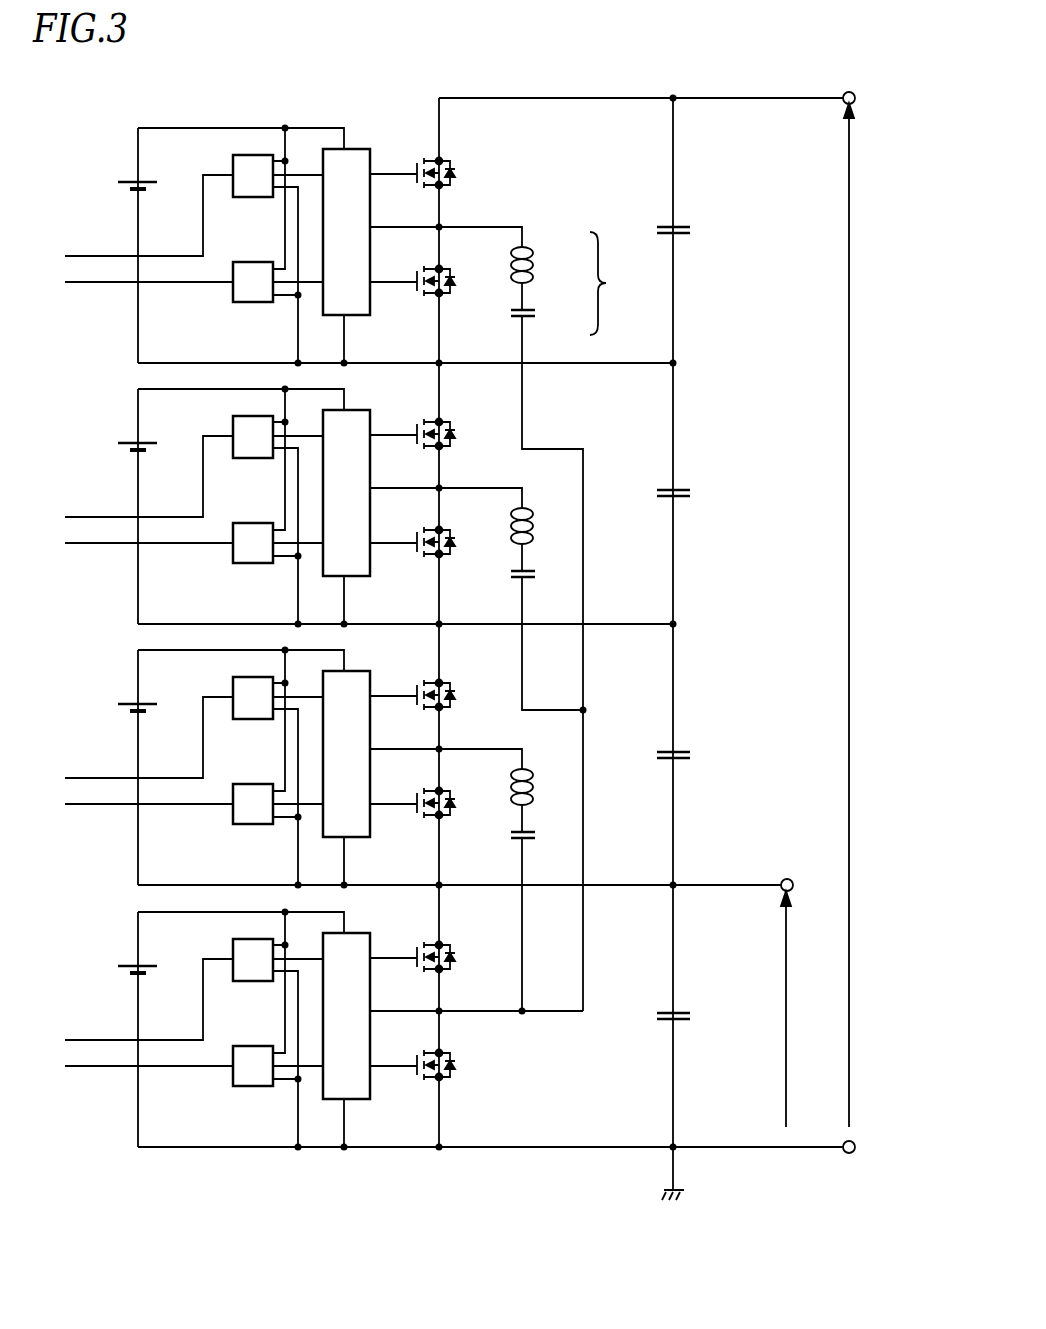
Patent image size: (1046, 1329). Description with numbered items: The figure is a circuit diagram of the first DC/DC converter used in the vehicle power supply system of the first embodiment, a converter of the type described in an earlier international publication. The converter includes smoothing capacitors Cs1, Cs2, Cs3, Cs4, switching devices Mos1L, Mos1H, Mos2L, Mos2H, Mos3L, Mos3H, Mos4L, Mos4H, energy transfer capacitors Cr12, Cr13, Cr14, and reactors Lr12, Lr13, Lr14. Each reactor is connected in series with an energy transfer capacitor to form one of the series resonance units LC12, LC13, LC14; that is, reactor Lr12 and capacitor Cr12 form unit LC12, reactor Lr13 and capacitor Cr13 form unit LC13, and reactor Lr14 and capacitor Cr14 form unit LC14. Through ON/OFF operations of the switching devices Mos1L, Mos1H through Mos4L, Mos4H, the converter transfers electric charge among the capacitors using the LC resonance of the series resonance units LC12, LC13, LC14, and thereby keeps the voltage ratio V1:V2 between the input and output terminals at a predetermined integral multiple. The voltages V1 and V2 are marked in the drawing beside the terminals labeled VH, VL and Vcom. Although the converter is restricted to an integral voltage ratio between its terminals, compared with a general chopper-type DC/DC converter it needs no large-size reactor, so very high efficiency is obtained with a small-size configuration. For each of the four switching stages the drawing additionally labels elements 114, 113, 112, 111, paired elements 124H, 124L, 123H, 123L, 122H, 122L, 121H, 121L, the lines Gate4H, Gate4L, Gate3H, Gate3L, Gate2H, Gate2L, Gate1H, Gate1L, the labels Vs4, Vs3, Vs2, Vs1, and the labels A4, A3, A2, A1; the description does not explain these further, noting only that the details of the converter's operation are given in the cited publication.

The drive circuit (stage 4) 114 is at (358, 248).
The drive circuit (stage 3) 113 is at (358, 509).
The drive circuit (stage 2) 112 is at (358, 770).
The drive circuit (stage 1) 111 is at (358, 1032).
The high-side gate signal isolator (stage 4) 124H is at (224, 165).
The low-side gate signal isolator (stage 4) 124L is at (253, 302).
The high-side gate signal isolator (stage 3) 123H is at (224, 426).
The low-side gate signal isolator (stage 3) 123L is at (253, 563).
The high-side gate signal isolator (stage 2) 122H is at (224, 687).
The low-side gate signal isolator (stage 2) 122L is at (253, 824).
The high-side gate signal isolator (stage 1) 121H is at (224, 949).
The low-side gate signal isolator (stage 1) 121L is at (253, 1086).
The switching device Mos4H is at (463, 161).
The switching device Mos4L is at (462, 296).
The switching device Mos3H is at (463, 422).
The switching device Mos3L is at (462, 557).
The switching device Mos2H is at (463, 683).
The switching device Mos2L is at (462, 818).
The switching device Mos1H is at (463, 945).
The switching device Mos1L is at (464, 1082).
The reactor Lr14 is at (548, 254).
The energy transfer capacitor Cr14 is at (548, 330).
The series resonance unit LC14 is at (667, 300).
The reactor Lr13 is at (548, 516).
The energy transfer capacitor Cr13 is at (548, 592).
The series resonance unit LC13 is at (563, 560).
The reactor Lr12 is at (548, 777).
The energy transfer capacitor Cr12 is at (548, 854).
The series resonance unit LC12 is at (563, 805).
The smoothing capacitor Cs4 is at (691, 247).
The smoothing capacitor Cs3 is at (691, 509).
The smoothing capacitor Cs2 is at (691, 774).
The smoothing capacitor Cs1 is at (691, 1034).
The cell circuit A4 is at (658, 203).
The cell circuit A3 is at (699, 458).
The cell circuit A2 is at (699, 709).
The cell circuit A1 is at (699, 968).
The gate drive power supply (stage 4) Vs4 is at (121, 170).
The gate drive power supply (stage 3) Vs3 is at (121, 431).
The gate drive power supply (stage 2) Vs2 is at (121, 692).
The gate drive power supply (stage 1) Vs1 is at (121, 954).
The high-side gate signal input (stage 4) Gate4H is at (125, 215).
The low-side gate signal input (stage 4) Gate4L is at (125, 300).
The high-side gate signal input (stage 3) Gate3H is at (125, 476).
The low-side gate signal input (stage 3) Gate3L is at (125, 561).
The high-side gate signal input (stage 2) Gate2H is at (125, 737).
The low-side gate signal input (stage 2) Gate2L is at (125, 822).
The high-side gate signal input (stage 1) Gate1H is at (125, 999).
The low-side gate signal input (stage 1) Gate1L is at (125, 1084).
The high voltage terminal VH is at (845, 82).
The low voltage terminal VL is at (789, 870).
The common terminal Vcom is at (849, 1162).
The input terminal voltage V1 is at (800, 1009).
The output terminal voltage V2 is at (865, 615).